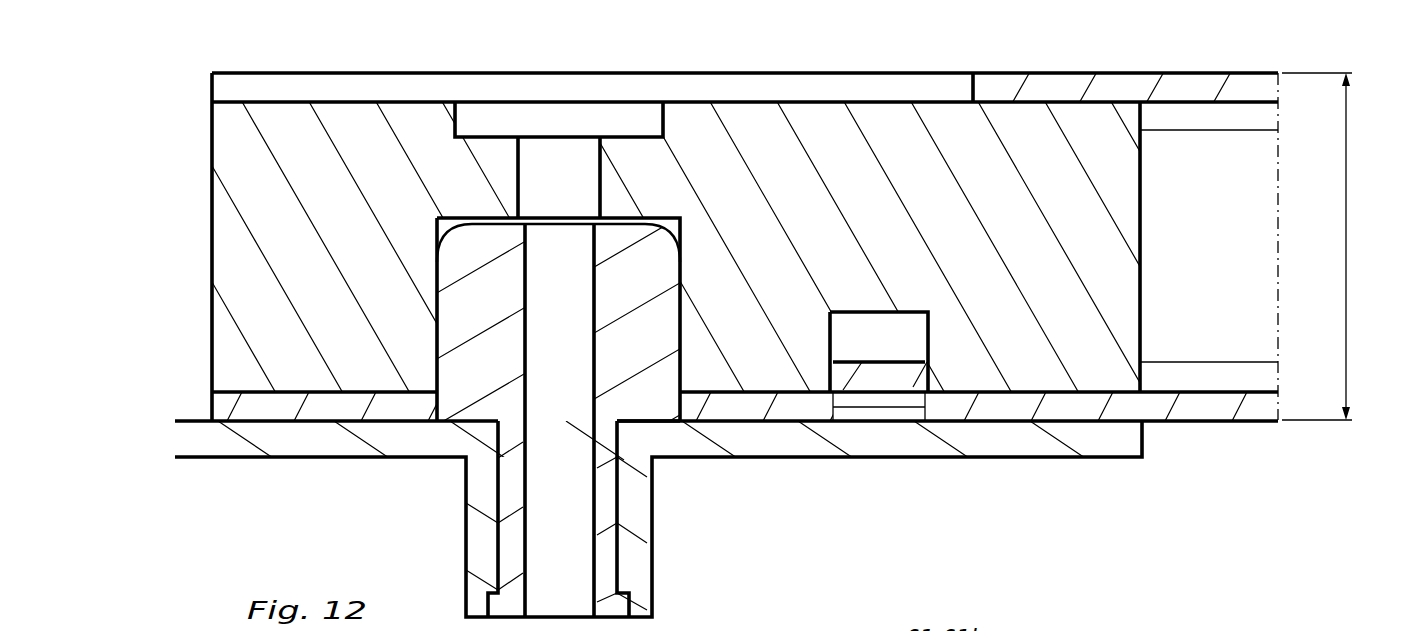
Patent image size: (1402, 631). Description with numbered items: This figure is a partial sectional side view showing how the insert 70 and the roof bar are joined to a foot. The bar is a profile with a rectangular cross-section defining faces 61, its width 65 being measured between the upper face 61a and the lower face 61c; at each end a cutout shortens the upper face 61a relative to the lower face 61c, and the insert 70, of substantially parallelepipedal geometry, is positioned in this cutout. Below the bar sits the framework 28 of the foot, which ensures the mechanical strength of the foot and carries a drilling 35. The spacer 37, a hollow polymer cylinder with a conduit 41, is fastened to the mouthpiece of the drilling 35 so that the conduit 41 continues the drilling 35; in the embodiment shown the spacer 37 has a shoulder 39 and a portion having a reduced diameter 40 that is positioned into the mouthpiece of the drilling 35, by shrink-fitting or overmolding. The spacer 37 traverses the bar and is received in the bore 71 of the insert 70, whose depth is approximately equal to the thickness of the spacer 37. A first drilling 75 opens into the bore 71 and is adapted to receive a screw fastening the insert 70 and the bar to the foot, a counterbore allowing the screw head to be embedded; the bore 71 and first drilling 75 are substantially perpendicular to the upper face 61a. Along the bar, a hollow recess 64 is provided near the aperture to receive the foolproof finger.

The framework 28 is at (241, 465).
The drilling 35 is at (622, 508).
The spacer 37 is at (450, 320).
The shoulder 39 is at (658, 401).
The portion having a reduced diameter 40 is at (517, 560).
The conduit 41 is at (553, 408).
The faces 61 is at (731, 244).
The upper face 61a is at (1197, 72).
The lower face 61c is at (1197, 422).
The hollow recess 64 is at (868, 400).
The width 65 is at (1331, 246).
The insert 70 is at (291, 257).
The bore 71 is at (440, 226).
The first drilling 75 is at (563, 160).